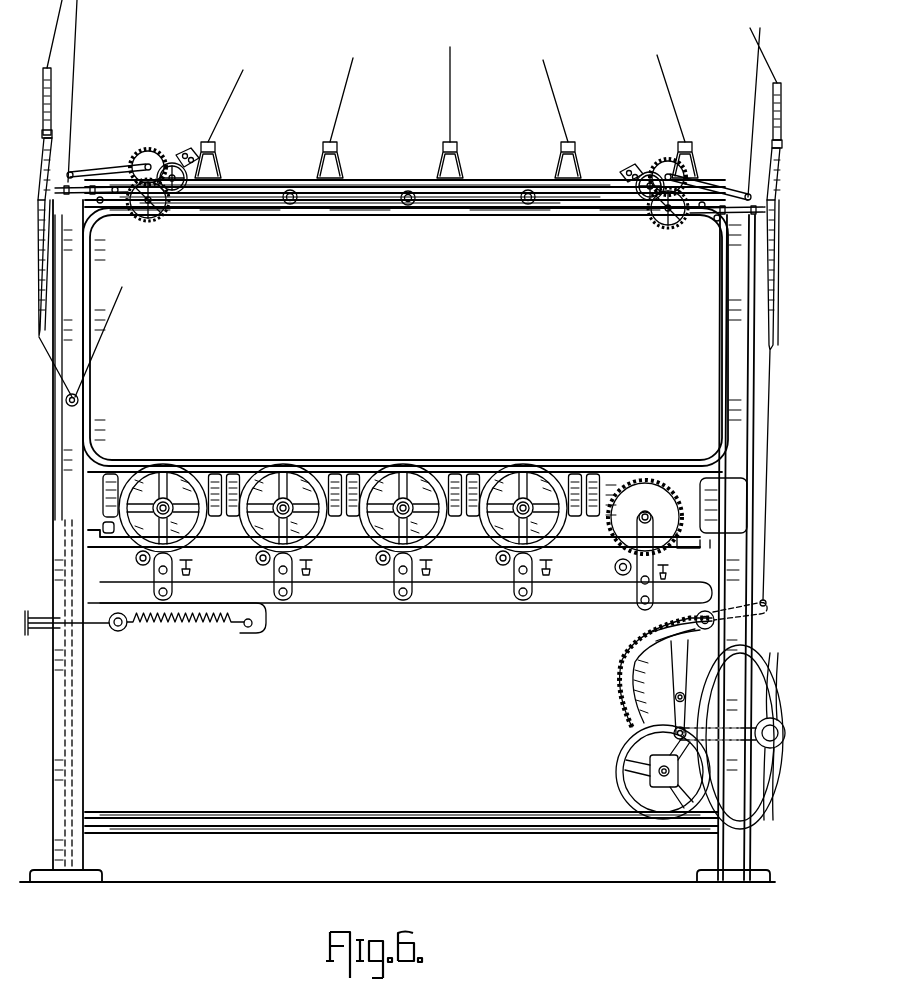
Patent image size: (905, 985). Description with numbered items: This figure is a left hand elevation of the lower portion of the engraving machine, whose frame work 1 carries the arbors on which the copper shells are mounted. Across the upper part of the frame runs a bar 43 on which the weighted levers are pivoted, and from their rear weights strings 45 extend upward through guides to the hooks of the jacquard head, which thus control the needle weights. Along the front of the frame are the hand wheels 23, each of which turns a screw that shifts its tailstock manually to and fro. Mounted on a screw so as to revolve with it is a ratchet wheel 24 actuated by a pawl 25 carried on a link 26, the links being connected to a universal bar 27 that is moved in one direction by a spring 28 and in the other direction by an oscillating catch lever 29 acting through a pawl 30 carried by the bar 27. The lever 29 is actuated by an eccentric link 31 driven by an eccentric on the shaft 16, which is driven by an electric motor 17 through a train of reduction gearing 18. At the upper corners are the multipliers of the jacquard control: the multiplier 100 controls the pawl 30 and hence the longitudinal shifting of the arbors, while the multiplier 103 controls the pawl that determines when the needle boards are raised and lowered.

The frame work 1 is at (75, 720).
The shaft 16 is at (770, 738).
The electric motor 17 is at (625, 782).
The train of reduction gearing 18 is at (672, 735).
The hand wheel 23 is at (517, 462).
The ratchet wheel 24 is at (640, 482).
The pawl 25 is at (648, 588).
The link 26 is at (400, 603).
The universal bar 27 is at (472, 597).
The spring 28 is at (193, 637).
The oscillating catch lever 29 is at (635, 640).
The pawl 30 is at (695, 618).
The eccentric link 31 is at (646, 677).
The bar 43 is at (527, 205).
The string 45 is at (670, 97).
The multiplier 100 is at (652, 222).
The multiplier 103 is at (163, 222).